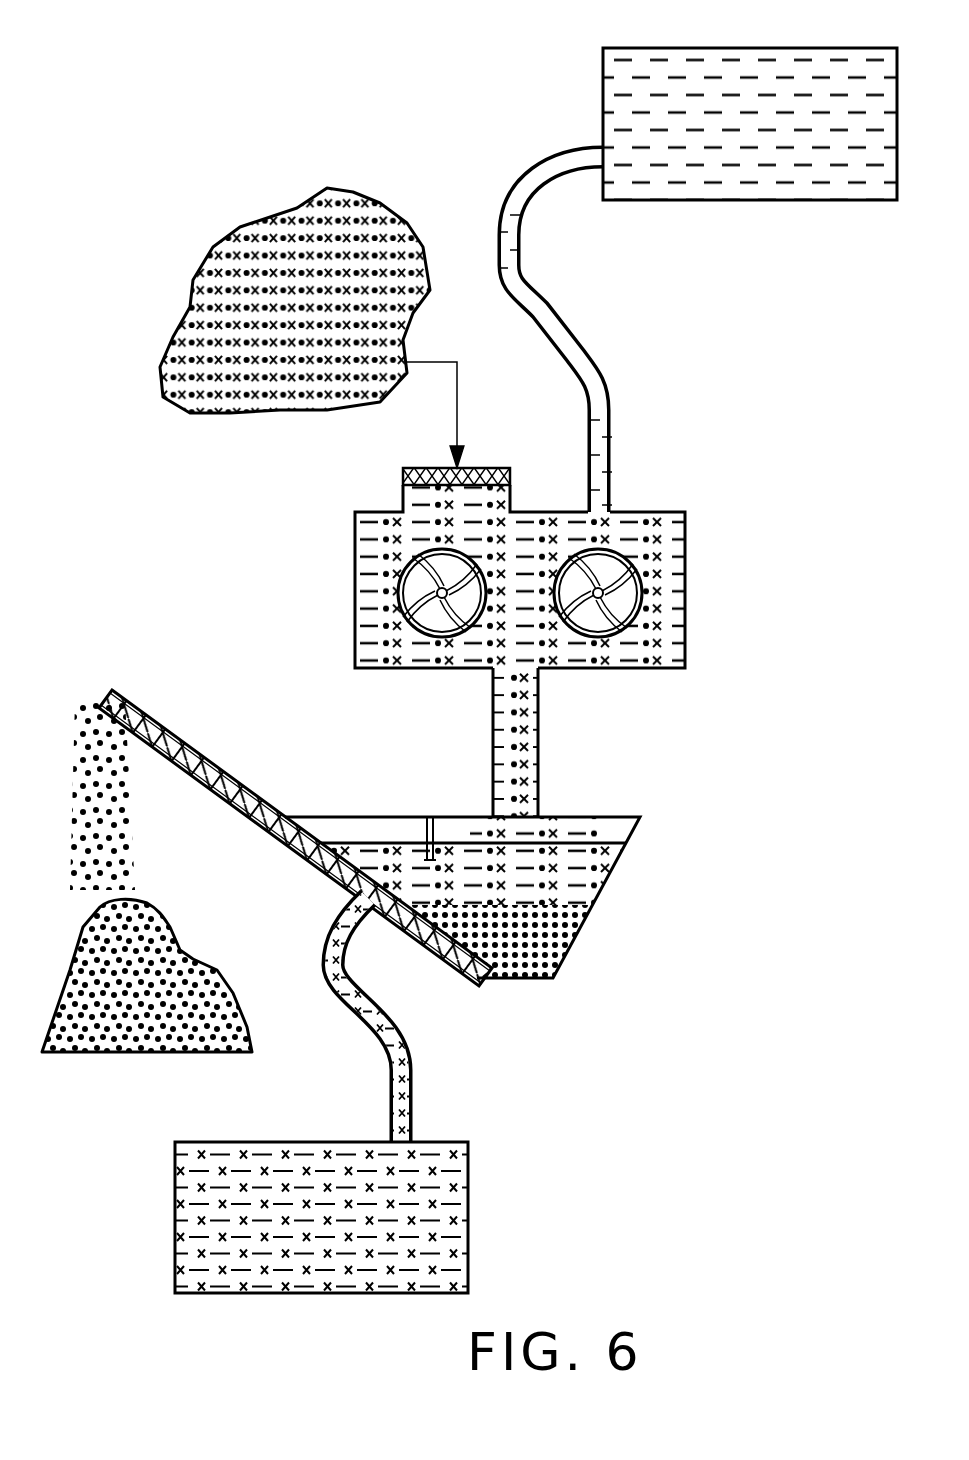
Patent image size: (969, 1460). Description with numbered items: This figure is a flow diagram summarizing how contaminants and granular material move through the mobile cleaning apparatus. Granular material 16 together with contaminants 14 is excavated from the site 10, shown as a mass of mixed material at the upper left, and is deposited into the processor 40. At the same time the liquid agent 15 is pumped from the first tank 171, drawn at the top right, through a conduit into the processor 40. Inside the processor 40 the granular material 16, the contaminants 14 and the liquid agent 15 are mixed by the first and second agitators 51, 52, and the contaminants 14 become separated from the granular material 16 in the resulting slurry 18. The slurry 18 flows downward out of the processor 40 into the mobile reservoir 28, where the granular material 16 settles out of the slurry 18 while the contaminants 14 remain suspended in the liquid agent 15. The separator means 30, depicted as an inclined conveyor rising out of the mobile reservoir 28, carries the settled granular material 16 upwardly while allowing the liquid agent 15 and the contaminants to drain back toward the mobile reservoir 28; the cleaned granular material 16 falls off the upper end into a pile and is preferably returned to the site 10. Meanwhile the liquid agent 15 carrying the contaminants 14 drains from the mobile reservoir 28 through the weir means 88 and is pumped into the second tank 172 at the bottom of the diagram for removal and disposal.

The site 10 is at (373, 187).
The contaminants 14 is at (293, 233).
The liquid agent 15 is at (647, 88).
The granular material 16 is at (213, 270).
The slurry 18 is at (530, 835).
The mobile reservoir 28 is at (642, 893).
The separator means 30 is at (245, 830).
The processor 40 is at (708, 513).
The first agitator 51 is at (438, 600).
The second agitator 52 is at (622, 595).
The weir means 88 is at (390, 880).
The first tank 171 is at (897, 50).
The second tank 172 is at (468, 1175).